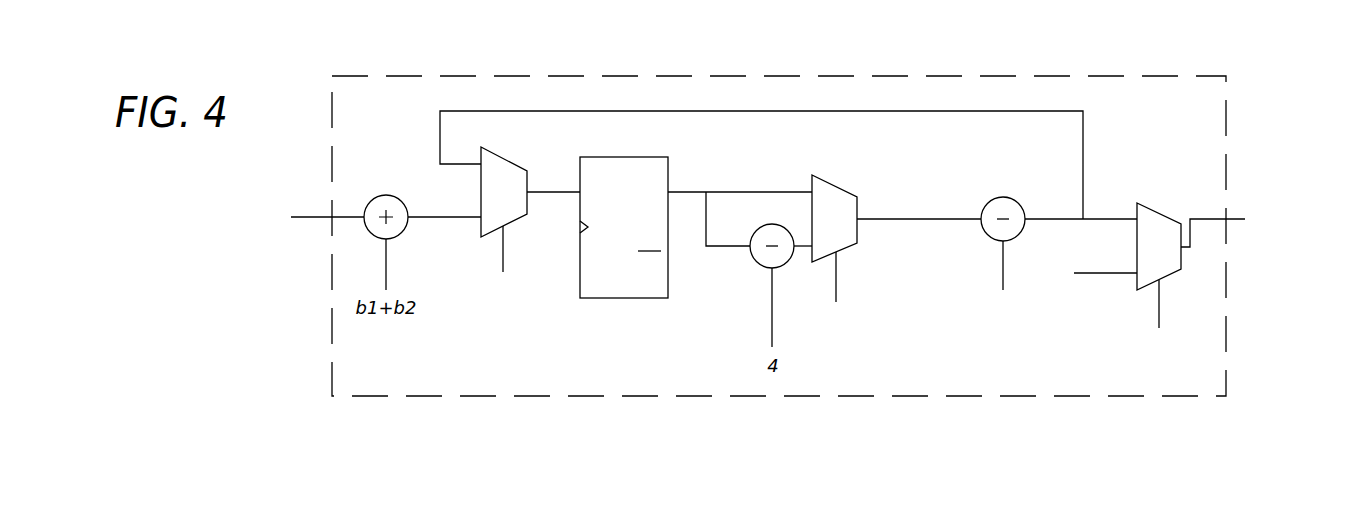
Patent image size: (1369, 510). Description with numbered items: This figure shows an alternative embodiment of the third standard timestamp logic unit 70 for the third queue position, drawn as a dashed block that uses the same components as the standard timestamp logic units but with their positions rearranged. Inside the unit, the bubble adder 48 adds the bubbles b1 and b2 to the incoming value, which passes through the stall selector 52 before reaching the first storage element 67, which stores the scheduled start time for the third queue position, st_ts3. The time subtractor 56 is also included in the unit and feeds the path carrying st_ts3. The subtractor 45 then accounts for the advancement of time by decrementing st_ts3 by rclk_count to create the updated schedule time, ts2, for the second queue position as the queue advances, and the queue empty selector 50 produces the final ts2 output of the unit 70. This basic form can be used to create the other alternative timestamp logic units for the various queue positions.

The bubble adder 48 is at (386, 195).
The stall selector 52 is at (505, 157).
The first storage element 67 is at (621, 280).
The time subtractor 56 is at (835, 186).
The subtractor 45 is at (1000, 197).
The queue empty selector 50 is at (1147, 213).
The alternative third standard timestamp logic unit 70 is at (1278, 186).